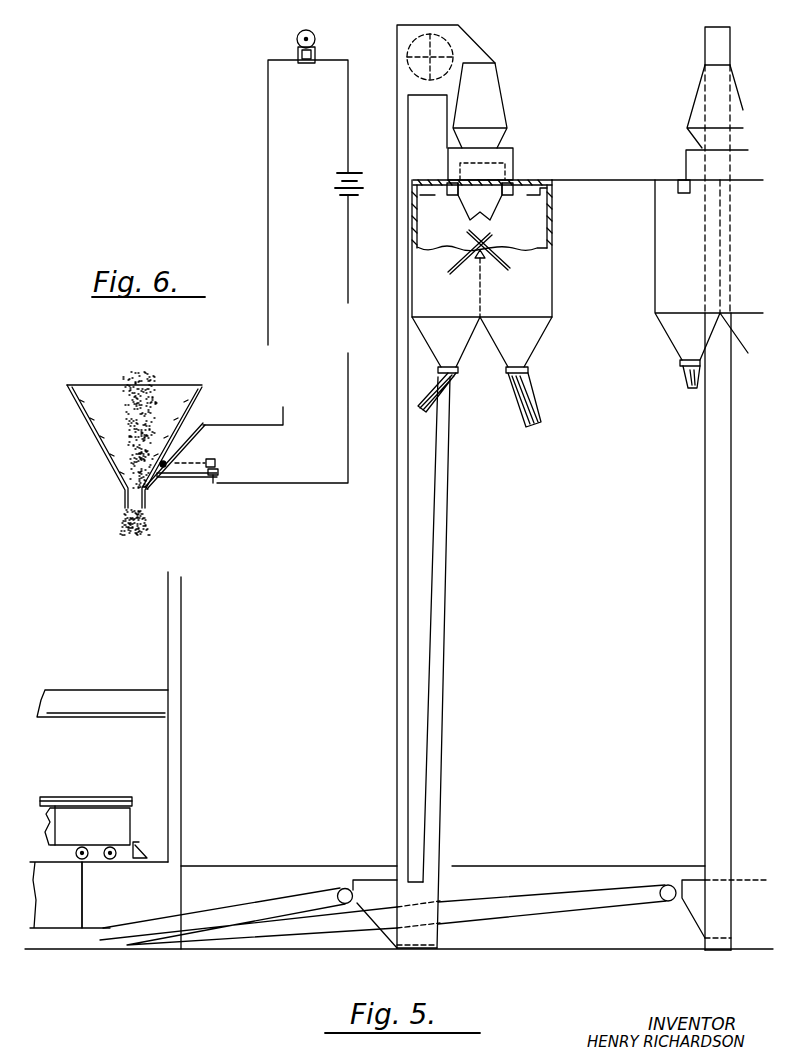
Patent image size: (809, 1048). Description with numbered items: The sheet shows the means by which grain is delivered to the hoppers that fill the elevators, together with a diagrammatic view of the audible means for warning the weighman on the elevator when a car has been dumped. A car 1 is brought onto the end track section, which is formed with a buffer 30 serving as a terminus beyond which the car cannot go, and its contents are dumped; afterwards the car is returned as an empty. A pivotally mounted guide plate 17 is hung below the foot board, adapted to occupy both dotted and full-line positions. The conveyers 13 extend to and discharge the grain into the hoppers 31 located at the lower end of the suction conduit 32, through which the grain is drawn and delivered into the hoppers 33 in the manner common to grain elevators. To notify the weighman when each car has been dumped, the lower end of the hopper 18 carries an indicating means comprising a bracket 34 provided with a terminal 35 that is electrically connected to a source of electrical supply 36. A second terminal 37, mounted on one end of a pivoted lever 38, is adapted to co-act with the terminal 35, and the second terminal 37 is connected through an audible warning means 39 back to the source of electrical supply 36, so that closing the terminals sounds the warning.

In FIG. 5, the car 1 is at (92, 800).
In FIG. 5, the conveyer 13 is at (245, 908).
In FIG. 5, the guide plate 17 is at (62, 903).
In FIG. 6, the hopper 18 is at (215, 374).
In FIG. 5, the buffer 30 is at (138, 842).
In FIG. 5, the hopper 31 is at (365, 890).
In FIG. 5, the suction conduit 32 is at (433, 876).
In FIG. 5, the hopper 33 is at (668, 245).
In FIG. 6, the bracket 34 is at (188, 477).
In FIG. 6, the terminal 35 is at (214, 478).
In FIG. 6, the source of electrical supply 36 is at (348, 197).
In FIG. 6, the second terminal 37 is at (192, 442).
In FIG. 6, the pivoted lever 38 is at (201, 450).
In FIG. 6, the audible warning means 39 is at (298, 49).